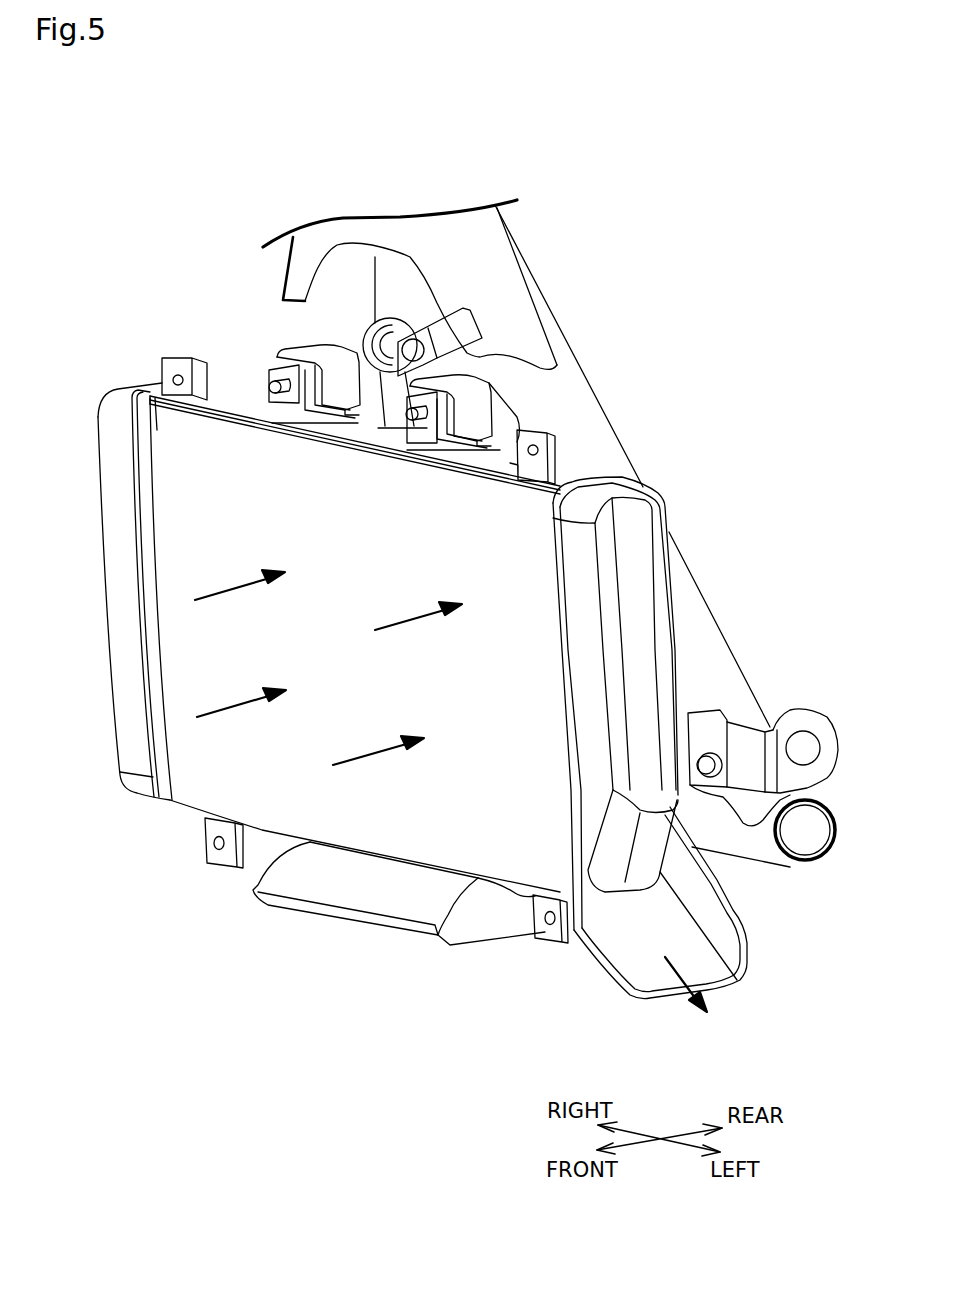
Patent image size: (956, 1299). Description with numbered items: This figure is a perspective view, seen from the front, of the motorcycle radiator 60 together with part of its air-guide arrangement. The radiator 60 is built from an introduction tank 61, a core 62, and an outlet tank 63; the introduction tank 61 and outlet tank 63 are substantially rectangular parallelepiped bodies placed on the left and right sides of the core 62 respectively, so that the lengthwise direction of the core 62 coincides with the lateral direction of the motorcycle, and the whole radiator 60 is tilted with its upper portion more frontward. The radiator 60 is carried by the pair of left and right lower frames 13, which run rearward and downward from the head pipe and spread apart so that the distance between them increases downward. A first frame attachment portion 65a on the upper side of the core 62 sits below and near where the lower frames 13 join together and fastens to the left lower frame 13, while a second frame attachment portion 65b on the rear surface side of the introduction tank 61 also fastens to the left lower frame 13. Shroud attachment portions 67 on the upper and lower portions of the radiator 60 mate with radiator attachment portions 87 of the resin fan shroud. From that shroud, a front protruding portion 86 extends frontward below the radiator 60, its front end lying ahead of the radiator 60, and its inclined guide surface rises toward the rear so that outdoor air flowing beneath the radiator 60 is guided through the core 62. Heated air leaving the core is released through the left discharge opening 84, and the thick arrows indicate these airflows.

The lower frame 13 is at (357, 250).
The radiator 60 is at (187, 332).
The introduction tank 61 is at (650, 520).
The core 62 is at (170, 483).
The outlet tank 63 is at (117, 403).
The first frame attachment portion 65a is at (397, 323).
The second frame attachment portion 65b is at (688, 717).
The shroud attachment portion 67 is at (298, 413).
The left discharge opening 84 is at (630, 963).
The front protruding portion 86 is at (380, 900).
The radiator attachment portion 87 is at (305, 342).